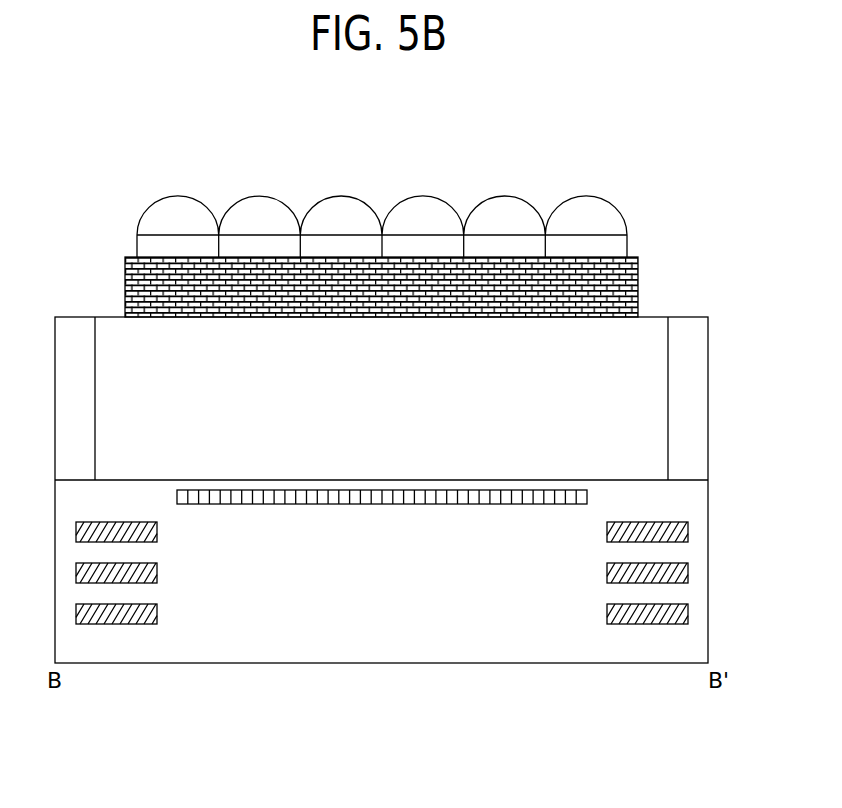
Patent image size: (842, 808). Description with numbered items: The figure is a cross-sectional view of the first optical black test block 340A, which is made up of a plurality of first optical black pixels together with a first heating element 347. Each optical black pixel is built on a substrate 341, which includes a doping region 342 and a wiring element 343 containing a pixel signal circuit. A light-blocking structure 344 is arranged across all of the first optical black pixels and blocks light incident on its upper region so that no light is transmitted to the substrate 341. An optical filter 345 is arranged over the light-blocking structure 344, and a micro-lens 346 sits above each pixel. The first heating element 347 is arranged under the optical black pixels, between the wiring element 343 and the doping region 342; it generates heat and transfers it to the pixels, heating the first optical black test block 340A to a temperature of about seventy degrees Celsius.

The first optical black test block 340A is at (103, 142).
The substrate 341 is at (702, 435).
The doping region 342 is at (658, 380).
The wiring element 343 is at (682, 528).
The light-blocking structure 344 is at (635, 280).
The optical filter 345 is at (620, 242).
The micro-lens 346 is at (610, 212).
The first heating element 347 is at (335, 500).